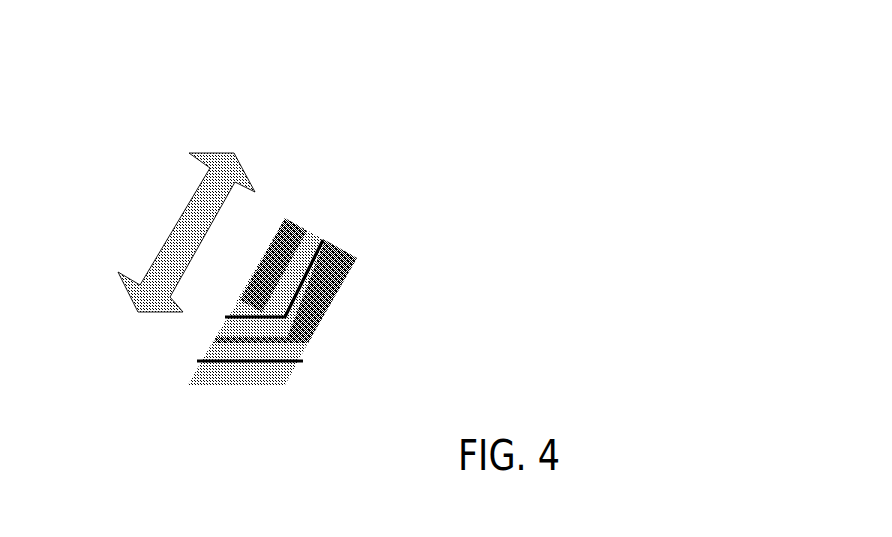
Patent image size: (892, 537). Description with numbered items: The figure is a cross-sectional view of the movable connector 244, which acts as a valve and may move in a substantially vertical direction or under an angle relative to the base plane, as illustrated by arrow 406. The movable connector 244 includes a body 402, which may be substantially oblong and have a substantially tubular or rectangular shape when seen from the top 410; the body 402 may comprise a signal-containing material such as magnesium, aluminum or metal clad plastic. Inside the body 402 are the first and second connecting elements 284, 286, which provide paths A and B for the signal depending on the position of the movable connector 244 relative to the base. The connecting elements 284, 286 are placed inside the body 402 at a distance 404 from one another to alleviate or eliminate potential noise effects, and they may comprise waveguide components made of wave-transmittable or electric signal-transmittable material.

The movable connector 244 is at (464, 74).
The body 402 is at (287, 222).
The distance 404 is at (215, 338).
The arrow 406 is at (177, 228).
The top 410 is at (353, 253).
The first connecting element 284 is at (328, 273).
The second connecting element 286 is at (252, 385).